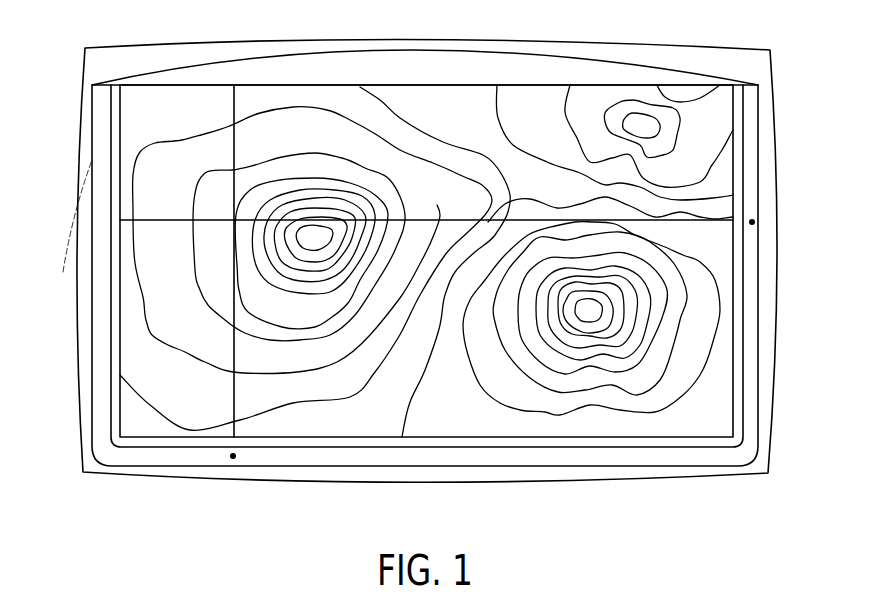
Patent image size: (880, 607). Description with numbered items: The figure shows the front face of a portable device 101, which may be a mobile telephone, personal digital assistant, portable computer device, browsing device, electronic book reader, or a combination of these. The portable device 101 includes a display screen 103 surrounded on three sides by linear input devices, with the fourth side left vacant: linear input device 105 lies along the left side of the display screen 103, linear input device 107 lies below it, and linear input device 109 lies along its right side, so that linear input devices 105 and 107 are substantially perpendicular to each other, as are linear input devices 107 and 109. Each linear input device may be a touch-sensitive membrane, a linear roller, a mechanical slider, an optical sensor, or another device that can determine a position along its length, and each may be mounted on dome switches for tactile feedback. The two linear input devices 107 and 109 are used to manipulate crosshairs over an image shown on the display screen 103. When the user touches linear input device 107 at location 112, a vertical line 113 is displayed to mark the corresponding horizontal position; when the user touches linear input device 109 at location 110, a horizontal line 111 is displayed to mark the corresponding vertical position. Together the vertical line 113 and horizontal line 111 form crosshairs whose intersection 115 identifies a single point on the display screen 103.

The portable device 101 is at (553, 68).
The display screen 103 is at (353, 95).
The linear input device 105 is at (100, 260).
The linear input device 107 is at (527, 457).
The linear input device 109 is at (748, 185).
The location 110 is at (752, 222).
The horizontal line 111 is at (163, 220).
The location 112 is at (233, 456).
The vertical line 113 is at (232, 103).
The intersection 115 is at (242, 212).